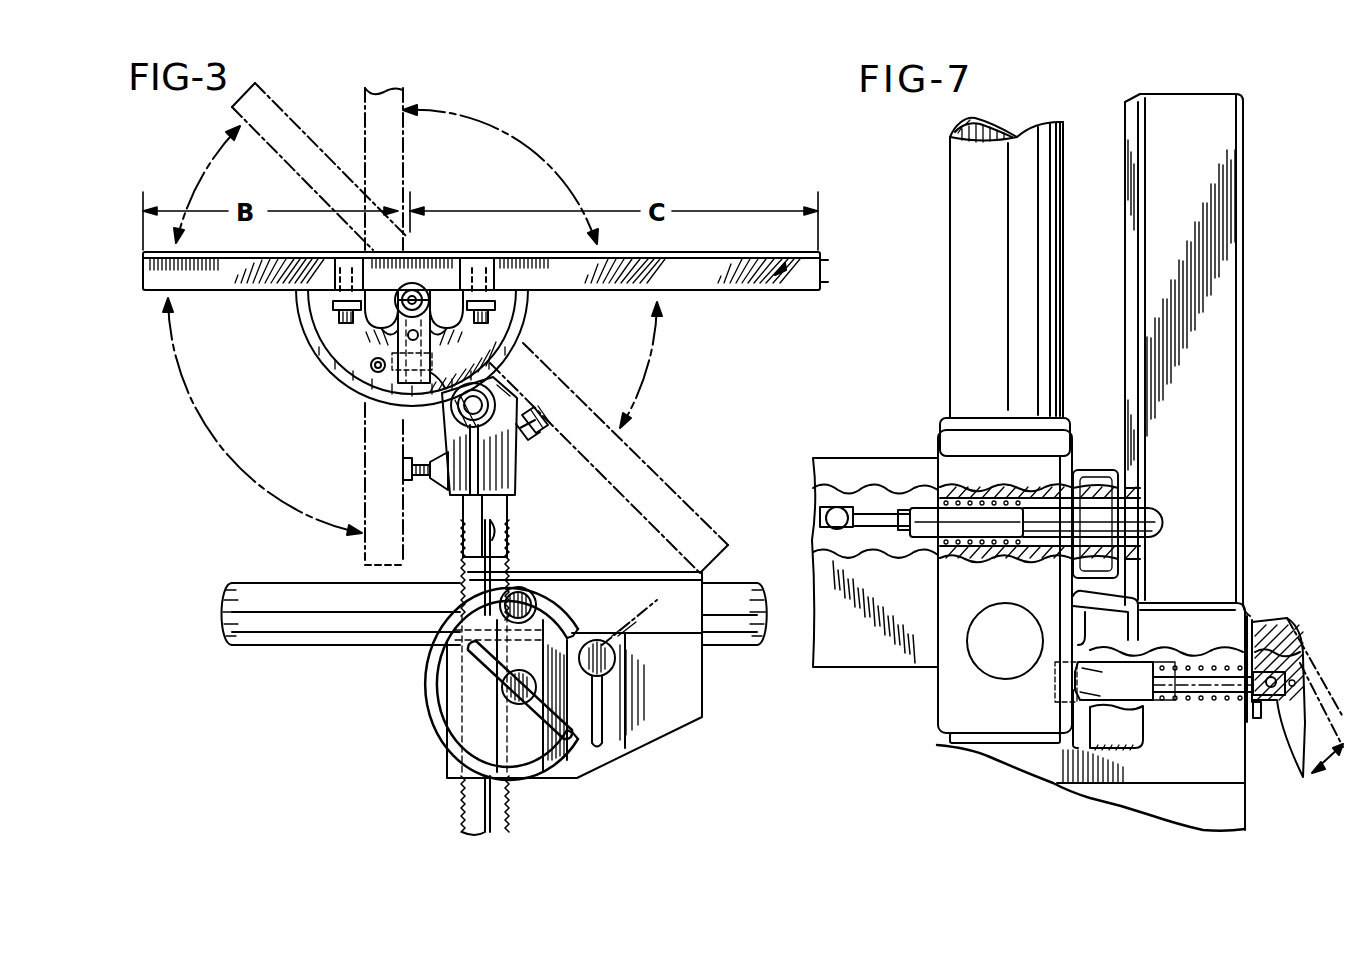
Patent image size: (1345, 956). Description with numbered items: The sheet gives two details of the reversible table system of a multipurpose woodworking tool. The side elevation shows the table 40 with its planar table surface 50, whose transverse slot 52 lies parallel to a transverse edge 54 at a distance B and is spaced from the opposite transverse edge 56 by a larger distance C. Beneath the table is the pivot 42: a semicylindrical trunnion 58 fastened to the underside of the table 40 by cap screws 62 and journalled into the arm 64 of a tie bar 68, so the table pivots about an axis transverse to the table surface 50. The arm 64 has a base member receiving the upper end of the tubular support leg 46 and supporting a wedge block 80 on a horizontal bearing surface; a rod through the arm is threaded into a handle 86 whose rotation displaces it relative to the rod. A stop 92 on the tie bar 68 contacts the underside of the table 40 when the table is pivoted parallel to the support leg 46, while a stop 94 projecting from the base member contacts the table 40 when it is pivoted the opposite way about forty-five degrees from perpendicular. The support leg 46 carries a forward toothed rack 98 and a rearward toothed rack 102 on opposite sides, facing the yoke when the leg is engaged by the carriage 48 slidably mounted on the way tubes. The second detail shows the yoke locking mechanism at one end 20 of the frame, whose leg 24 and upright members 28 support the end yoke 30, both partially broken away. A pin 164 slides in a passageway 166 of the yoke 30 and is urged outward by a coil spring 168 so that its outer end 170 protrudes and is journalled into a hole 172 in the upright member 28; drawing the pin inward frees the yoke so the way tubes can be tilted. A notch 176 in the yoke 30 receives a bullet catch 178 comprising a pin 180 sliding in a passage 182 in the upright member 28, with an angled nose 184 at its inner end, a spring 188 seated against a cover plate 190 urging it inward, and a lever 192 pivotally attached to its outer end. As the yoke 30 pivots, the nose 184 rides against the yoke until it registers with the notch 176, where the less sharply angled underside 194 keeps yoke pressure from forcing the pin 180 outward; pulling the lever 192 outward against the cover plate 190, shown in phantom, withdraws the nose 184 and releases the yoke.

In FIG. 7, the end 20 is at (1245, 559).
In FIG. 7, the leg 24 is at (1240, 810).
In FIG. 7, the upright members 28 is at (1228, 378).
In FIG. 7, the end yoke 30 is at (1040, 473).
In FIG. 3, the table 40 is at (782, 267).
In FIG. 3, the pivot 42 is at (322, 363).
In FIG. 3, the support leg 46 is at (507, 545).
In FIG. 3, the carriage 48 is at (665, 717).
In FIG. 3, the table surface 50 is at (660, 253).
In FIG. 3, the transverse slot 52 is at (412, 283).
In FIG. 3, the transverse edge 54 is at (150, 283).
In FIG. 3, the opposite transverse edge 56 is at (824, 271).
In FIG. 3, the semicylindrical trunnion 58 is at (513, 310).
In FIG. 3, the cap screws 62 is at (335, 306).
In FIG. 3, the arm 64 is at (500, 373).
In FIG. 3, the tie bar 68 is at (520, 462).
In FIG. 3, the wedge block 80 is at (455, 420).
In FIG. 3, the handle 86 is at (463, 530).
In FIG. 3, the stop 92 is at (418, 482).
In FIG. 3, the stops 94 is at (546, 418).
In FIG. 3, the forward toothed rack 98 is at (507, 567).
In FIG. 3, the rearward toothed rack 102 is at (460, 586).
In FIG. 7, the pins 164 is at (1100, 500).
In FIG. 7, the passageway 166 is at (995, 500).
In FIG. 7, the coil spring 168 is at (960, 486).
In FIG. 7, the outer end 170 is at (862, 472).
In FIG. 7, the holes 172 is at (822, 508).
In FIG. 7, the notches 176 is at (1055, 682).
In FIG. 7, the bullet catches 178 is at (1280, 617).
In FIG. 7, the pin 180 is at (1208, 684).
In FIG. 7, the passage 182 is at (1235, 655).
In FIG. 7, the angled nose 184 is at (1055, 648).
In FIG. 7, the spring 188 is at (1165, 648).
In FIG. 7, the cover plate 190 is at (1254, 614).
In FIG. 7, the lever 192 is at (1270, 740).
In FIG. 7, the underside 194 is at (1065, 752).